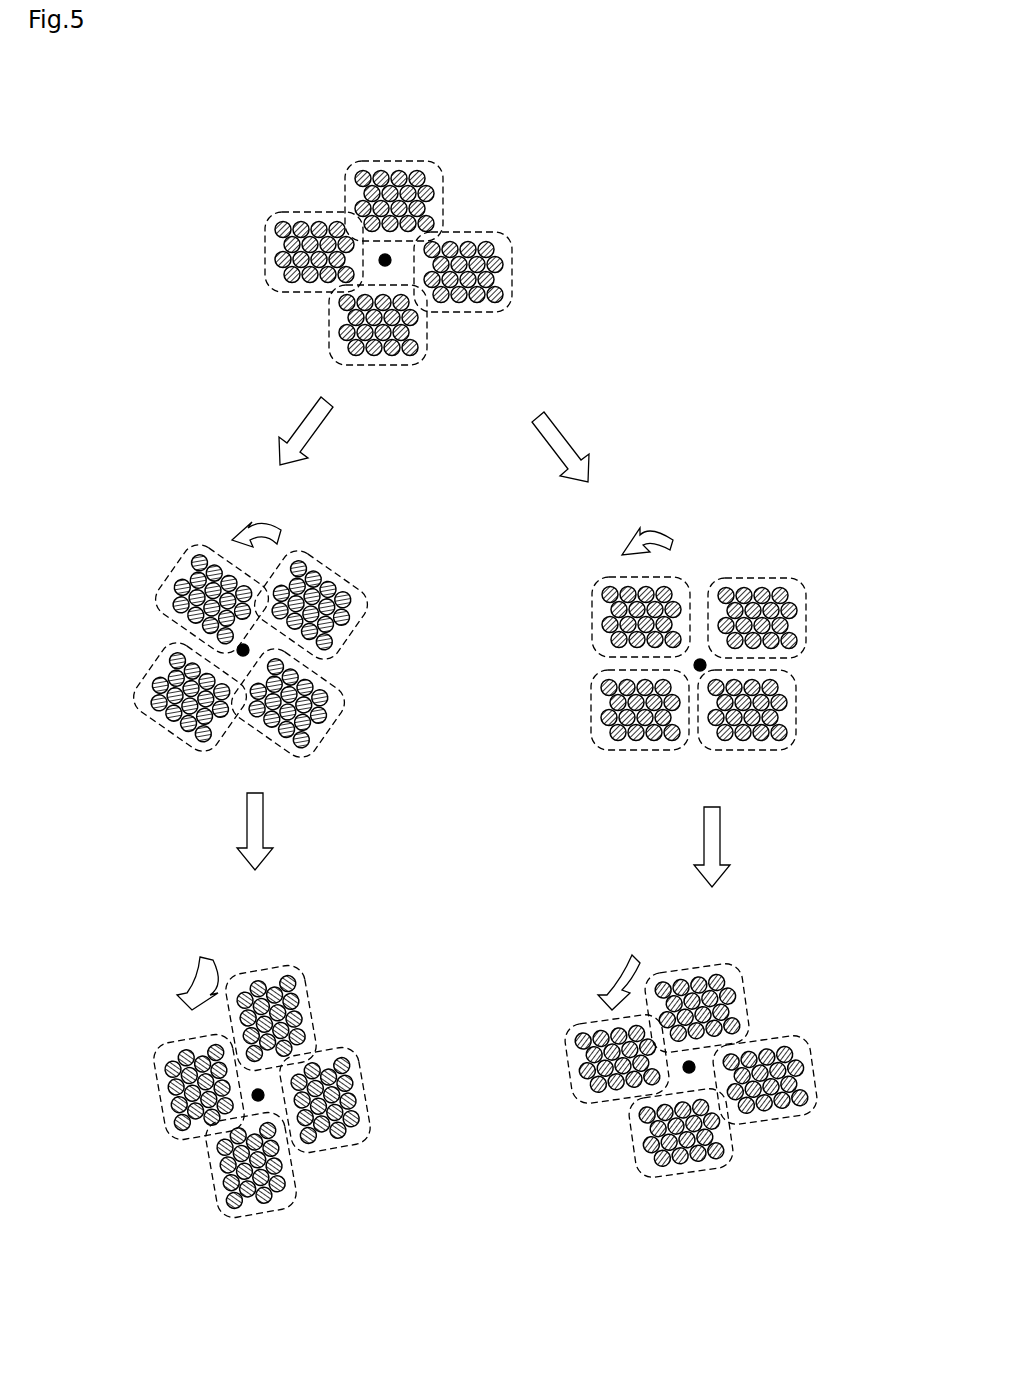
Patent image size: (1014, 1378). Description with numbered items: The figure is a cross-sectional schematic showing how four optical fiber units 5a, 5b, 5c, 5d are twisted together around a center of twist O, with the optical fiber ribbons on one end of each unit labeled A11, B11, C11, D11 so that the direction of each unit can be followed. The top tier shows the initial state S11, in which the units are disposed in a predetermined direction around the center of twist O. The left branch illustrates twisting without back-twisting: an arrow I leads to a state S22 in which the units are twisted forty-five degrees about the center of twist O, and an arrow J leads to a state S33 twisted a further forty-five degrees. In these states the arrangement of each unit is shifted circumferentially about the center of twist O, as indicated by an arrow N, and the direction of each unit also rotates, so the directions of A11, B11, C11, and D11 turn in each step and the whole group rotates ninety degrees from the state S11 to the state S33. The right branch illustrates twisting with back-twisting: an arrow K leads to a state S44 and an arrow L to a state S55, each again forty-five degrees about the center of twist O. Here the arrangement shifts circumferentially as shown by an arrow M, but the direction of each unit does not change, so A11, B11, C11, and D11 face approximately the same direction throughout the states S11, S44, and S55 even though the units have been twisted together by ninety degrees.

The optical fiber unit 5a is at (368, 165).
The optical fiber unit 5b is at (290, 285).
The optical fiber unit 5c is at (428, 345).
The optical fiber unit 5d is at (498, 238).
The optical fiber ribbon A11 is at (402, 163).
The optical fiber ribbon B11 is at (285, 212).
The optical fiber ribbon C11 is at (428, 318).
The optical fiber ribbon D11 is at (512, 262).
The center of twist O is at (477, 677).
The state S11 is at (554, 104).
The state S22 is at (394, 493).
The state S33 is at (391, 895).
The state S44 is at (826, 514).
The state S55 is at (852, 895).
The arrow I is at (304, 431).
The arrow J is at (262, 831).
The arrow K is at (560, 447).
The arrow L is at (703, 847).
The arrow M is at (623, 761).
The arrow N is at (229, 756).